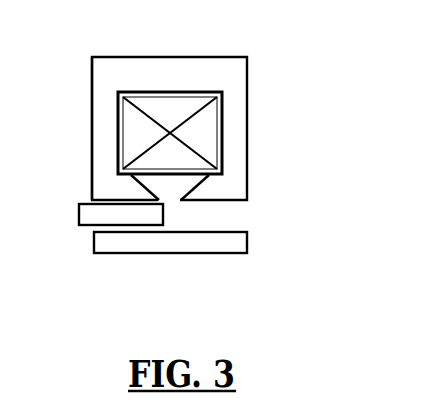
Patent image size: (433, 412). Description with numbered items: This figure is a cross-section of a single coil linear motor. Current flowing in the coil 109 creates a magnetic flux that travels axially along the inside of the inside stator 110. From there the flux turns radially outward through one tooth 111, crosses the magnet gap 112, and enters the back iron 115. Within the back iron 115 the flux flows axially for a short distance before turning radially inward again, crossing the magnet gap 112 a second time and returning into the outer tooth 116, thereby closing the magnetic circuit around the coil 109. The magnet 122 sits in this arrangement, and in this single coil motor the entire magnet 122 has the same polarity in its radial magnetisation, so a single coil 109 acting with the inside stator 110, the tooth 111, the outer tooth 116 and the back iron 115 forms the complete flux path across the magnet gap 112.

The coil 109 is at (160, 127).
The inside stator 110 is at (248, 85).
The tooth 111 is at (233, 153).
The magnet gap 112 is at (213, 217).
The back iron 115 is at (235, 238).
The outer tooth 116 is at (104, 131).
The magnet 122 is at (98, 215).